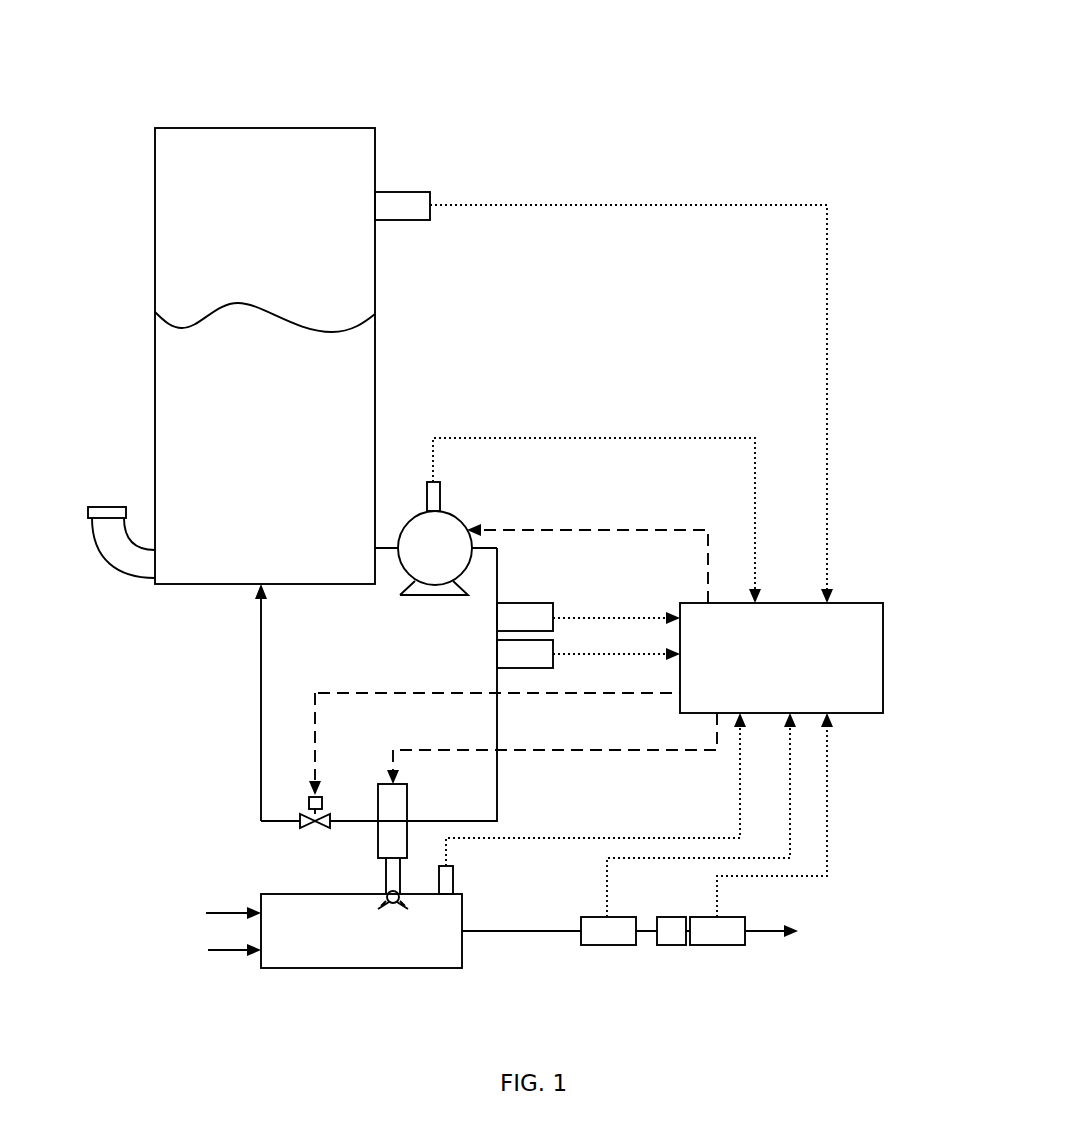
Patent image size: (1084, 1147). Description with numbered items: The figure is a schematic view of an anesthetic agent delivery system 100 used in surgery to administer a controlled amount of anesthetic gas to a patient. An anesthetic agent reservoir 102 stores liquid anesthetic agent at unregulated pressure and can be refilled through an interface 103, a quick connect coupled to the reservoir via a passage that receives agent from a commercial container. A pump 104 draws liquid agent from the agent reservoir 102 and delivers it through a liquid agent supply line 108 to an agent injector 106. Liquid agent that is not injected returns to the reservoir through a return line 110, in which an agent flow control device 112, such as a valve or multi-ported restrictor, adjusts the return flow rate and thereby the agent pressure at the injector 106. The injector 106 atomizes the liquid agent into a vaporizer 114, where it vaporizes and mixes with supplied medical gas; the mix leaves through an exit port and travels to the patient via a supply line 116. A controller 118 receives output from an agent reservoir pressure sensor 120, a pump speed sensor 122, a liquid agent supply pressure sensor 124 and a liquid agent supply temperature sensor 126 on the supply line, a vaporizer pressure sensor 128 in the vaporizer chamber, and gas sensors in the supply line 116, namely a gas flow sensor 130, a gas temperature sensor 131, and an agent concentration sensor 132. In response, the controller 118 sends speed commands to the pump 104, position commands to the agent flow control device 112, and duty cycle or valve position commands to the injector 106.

The anesthetic agent delivery system 100 is at (814, 58).
The anesthetic agent reservoir 102 is at (350, 128).
The interface 103 is at (104, 506).
The pump 104 is at (460, 522).
The agent injector 106 is at (407, 806).
The liquid agent supply line 108 is at (588, 621).
The return line 110 is at (261, 672).
The agent flow control device 112 is at (318, 796).
The vaporizer 114 is at (338, 944).
The supply line 116 is at (508, 931).
The controller 118 is at (764, 671).
The agent reservoir pressure sensor 120 is at (408, 192).
The pump speed sensor 122 is at (440, 488).
The liquid agent supply pressure sensor 124 is at (535, 603).
The liquid agent supply temperature sensor 126 is at (540, 668).
The vaporizer pressure sensor 128 is at (453, 886).
The gas flow sensor 130 is at (606, 946).
The gas temperature sensor 131 is at (673, 946).
The agent concentration sensor 132 is at (715, 946).